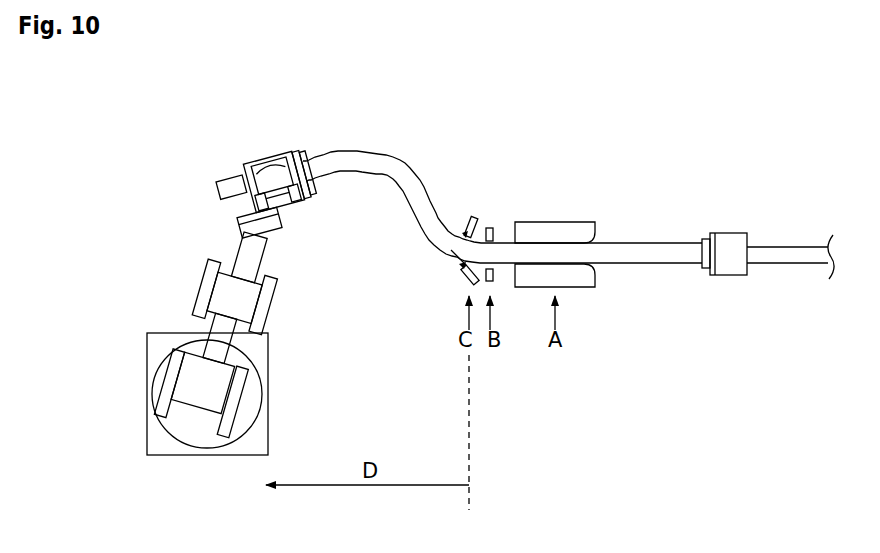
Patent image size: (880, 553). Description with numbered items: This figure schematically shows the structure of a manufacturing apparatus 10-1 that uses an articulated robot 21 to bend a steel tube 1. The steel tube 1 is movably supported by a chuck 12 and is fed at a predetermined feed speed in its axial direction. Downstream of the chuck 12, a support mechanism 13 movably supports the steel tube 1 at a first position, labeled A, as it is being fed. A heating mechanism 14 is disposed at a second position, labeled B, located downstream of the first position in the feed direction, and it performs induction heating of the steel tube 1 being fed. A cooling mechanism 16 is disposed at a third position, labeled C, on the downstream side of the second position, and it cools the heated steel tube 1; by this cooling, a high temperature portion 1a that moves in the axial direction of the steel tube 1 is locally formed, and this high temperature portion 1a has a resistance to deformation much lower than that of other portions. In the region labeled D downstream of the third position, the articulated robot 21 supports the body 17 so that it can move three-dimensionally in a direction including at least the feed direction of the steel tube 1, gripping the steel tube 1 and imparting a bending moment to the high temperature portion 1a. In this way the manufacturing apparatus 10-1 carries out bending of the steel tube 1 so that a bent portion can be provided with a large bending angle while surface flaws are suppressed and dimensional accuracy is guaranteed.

The steel tube 1 is at (797, 246).
The high temperature portion 1a is at (468, 250).
The manufacturing apparatus 10-1 is at (518, 185).
The chuck 12 is at (727, 221).
The support mechanism 13 is at (558, 218).
The heating mechanism 14 is at (492, 226).
The cooling mechanism 16 is at (473, 218).
The body 17 is at (280, 151).
The articulated robot 21 is at (203, 286).